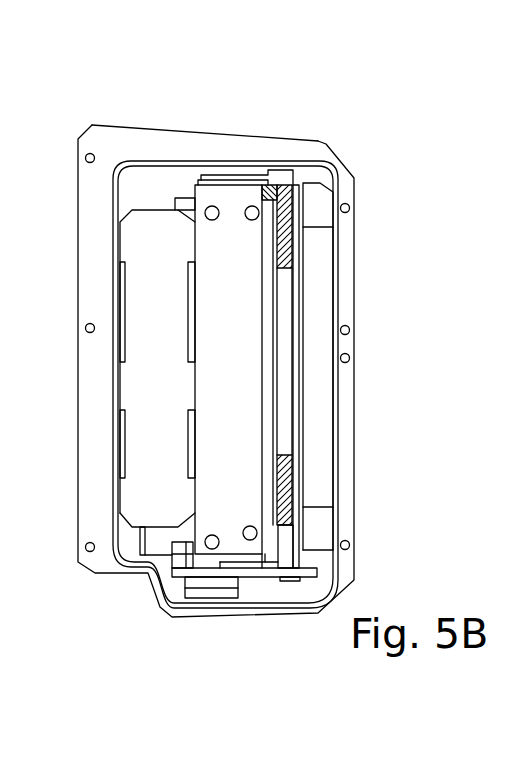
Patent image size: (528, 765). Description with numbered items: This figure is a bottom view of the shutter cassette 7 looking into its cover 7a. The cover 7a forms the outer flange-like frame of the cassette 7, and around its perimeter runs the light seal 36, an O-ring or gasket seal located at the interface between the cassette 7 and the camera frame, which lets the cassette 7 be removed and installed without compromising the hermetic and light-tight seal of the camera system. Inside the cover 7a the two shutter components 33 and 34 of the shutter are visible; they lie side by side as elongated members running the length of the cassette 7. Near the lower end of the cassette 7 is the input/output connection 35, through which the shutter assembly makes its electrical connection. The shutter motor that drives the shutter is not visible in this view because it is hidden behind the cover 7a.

The shutter cassette 7 is at (384, 437).
The cover 7a is at (79, 138).
The light seal 36 is at (188, 131).
The shutter component 33 is at (264, 306).
The shutter component 34 is at (283, 404).
The input/output connection 35 is at (230, 613).